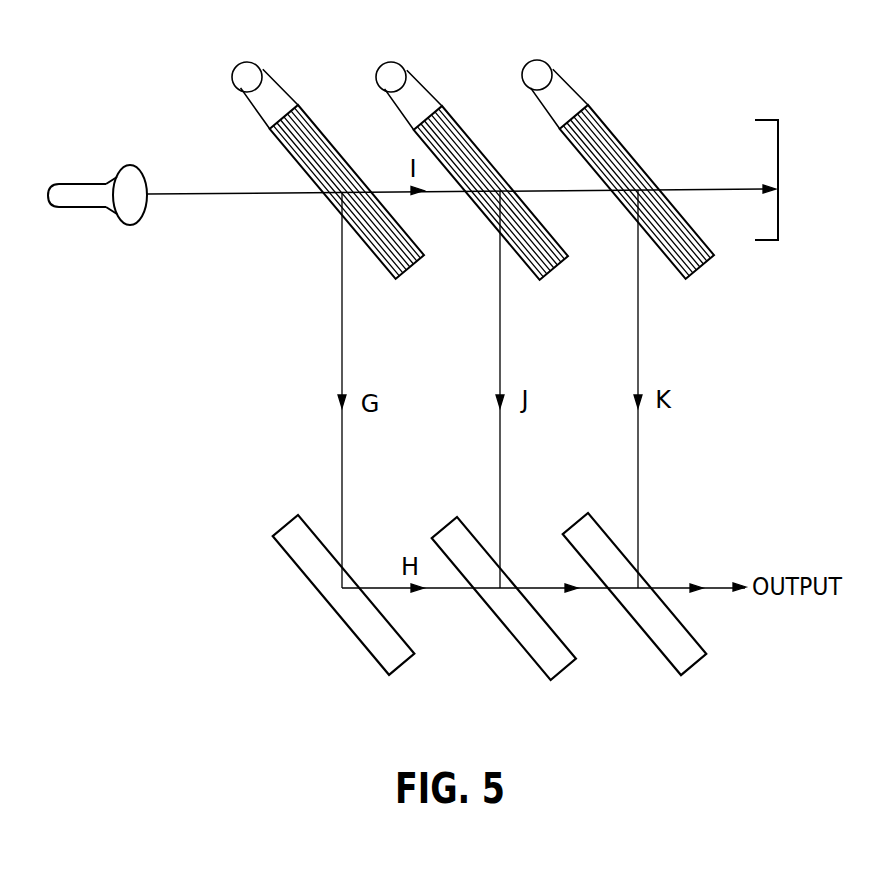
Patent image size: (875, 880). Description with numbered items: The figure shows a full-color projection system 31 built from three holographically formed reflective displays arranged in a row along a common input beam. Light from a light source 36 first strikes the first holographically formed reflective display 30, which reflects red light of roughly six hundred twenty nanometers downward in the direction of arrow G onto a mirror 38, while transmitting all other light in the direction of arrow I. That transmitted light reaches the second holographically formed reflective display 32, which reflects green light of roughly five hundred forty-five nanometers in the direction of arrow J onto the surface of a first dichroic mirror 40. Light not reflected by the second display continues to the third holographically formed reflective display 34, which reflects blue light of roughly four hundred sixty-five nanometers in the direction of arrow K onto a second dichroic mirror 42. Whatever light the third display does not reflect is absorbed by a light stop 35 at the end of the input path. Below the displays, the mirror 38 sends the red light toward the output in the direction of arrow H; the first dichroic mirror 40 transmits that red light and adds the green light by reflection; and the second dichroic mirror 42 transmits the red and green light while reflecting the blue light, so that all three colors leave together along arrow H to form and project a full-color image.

The first holographically formed reflective display 30 is at (273, 133).
The full-color projection system 31 is at (684, 140).
The second holographically formed reflective display 32 is at (456, 127).
The third holographically formed reflective display 34 is at (610, 128).
The light stop 35 is at (778, 158).
The light source 36 is at (92, 184).
The mirror 38 is at (357, 635).
The first dichroic mirror 40 is at (520, 638).
The second dichroic mirror 42 is at (653, 638).